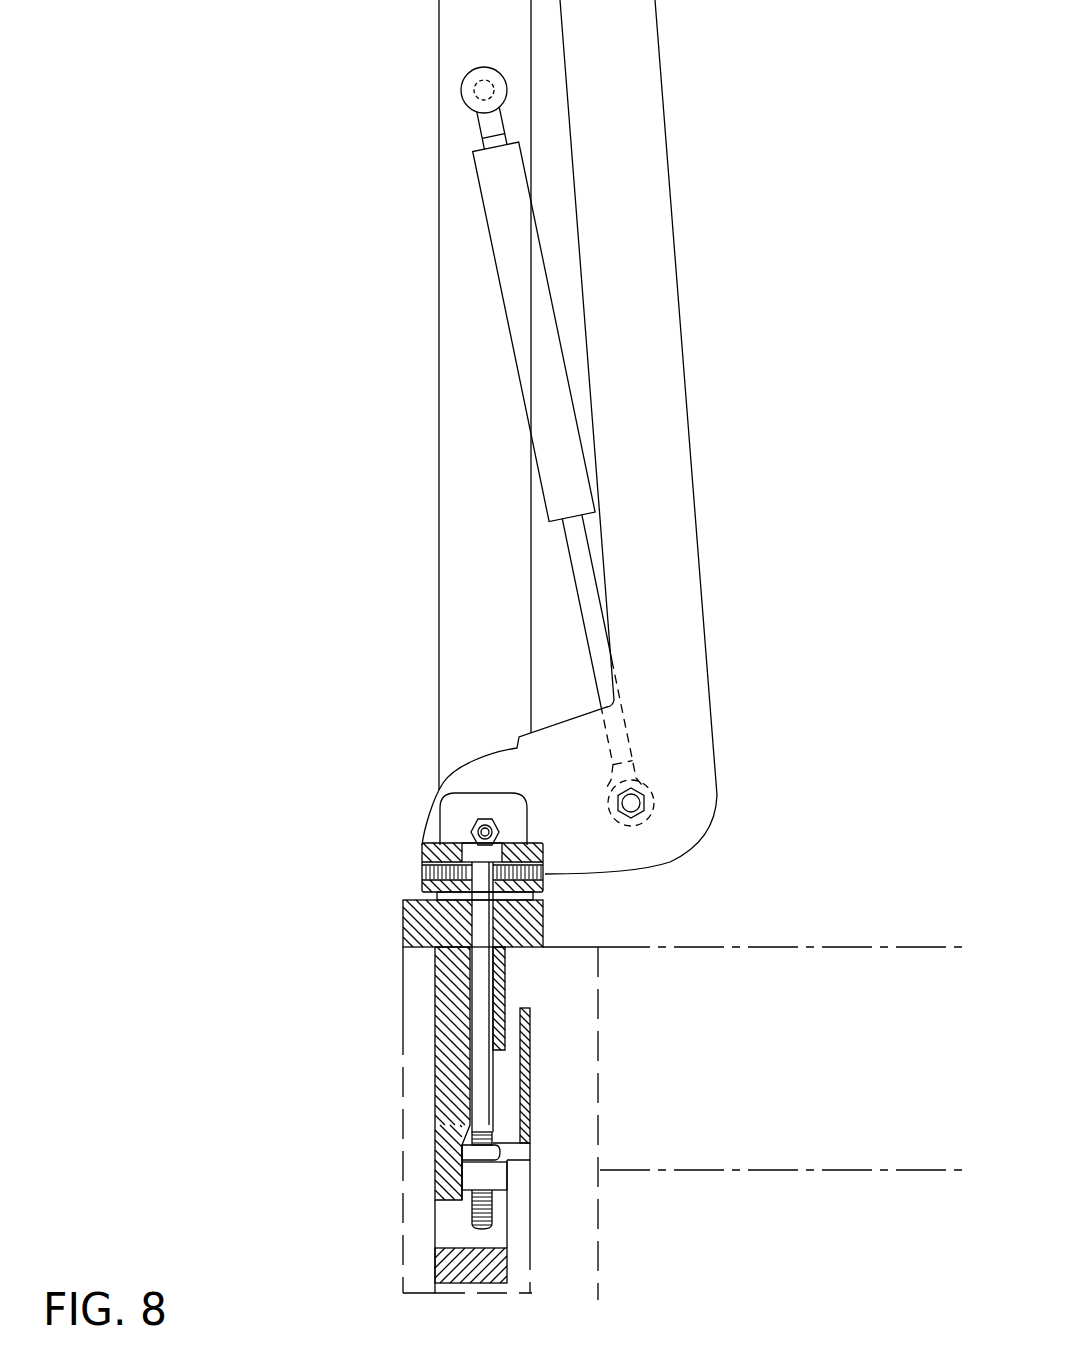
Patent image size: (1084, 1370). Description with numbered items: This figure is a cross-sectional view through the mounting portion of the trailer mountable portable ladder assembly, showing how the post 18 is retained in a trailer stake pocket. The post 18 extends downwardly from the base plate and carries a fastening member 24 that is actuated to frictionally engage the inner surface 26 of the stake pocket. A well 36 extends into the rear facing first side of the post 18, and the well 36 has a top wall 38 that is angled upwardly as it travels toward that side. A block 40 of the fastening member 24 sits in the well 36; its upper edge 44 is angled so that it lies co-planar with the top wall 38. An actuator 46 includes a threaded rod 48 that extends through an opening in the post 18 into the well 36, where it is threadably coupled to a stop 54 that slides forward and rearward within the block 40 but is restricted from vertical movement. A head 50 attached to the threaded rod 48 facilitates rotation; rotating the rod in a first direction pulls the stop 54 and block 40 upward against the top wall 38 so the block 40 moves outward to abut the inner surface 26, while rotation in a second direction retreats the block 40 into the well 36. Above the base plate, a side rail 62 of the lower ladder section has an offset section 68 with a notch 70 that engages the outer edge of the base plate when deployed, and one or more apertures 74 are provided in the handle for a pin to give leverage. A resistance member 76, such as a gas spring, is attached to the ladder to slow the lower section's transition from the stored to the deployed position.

The post 18 is at (452, 1003).
The fastening member 24 is at (566, 1088).
The inner surface 26 is at (543, 910).
The well 36 is at (450, 1225).
The top wall 38 is at (437, 1155).
The block 40 is at (507, 1167).
The upper edge 44 is at (500, 1030).
The actuator 46 is at (388, 872).
The threaded rod 48 is at (482, 1057).
The head 50 is at (468, 830).
The stop 54 is at (498, 1147).
The side rails 62 is at (677, 330).
The offset section 68 is at (550, 747).
The notch 70 is at (513, 744).
The apertures 74 is at (540, 902).
The resistance member 76 is at (525, 273).